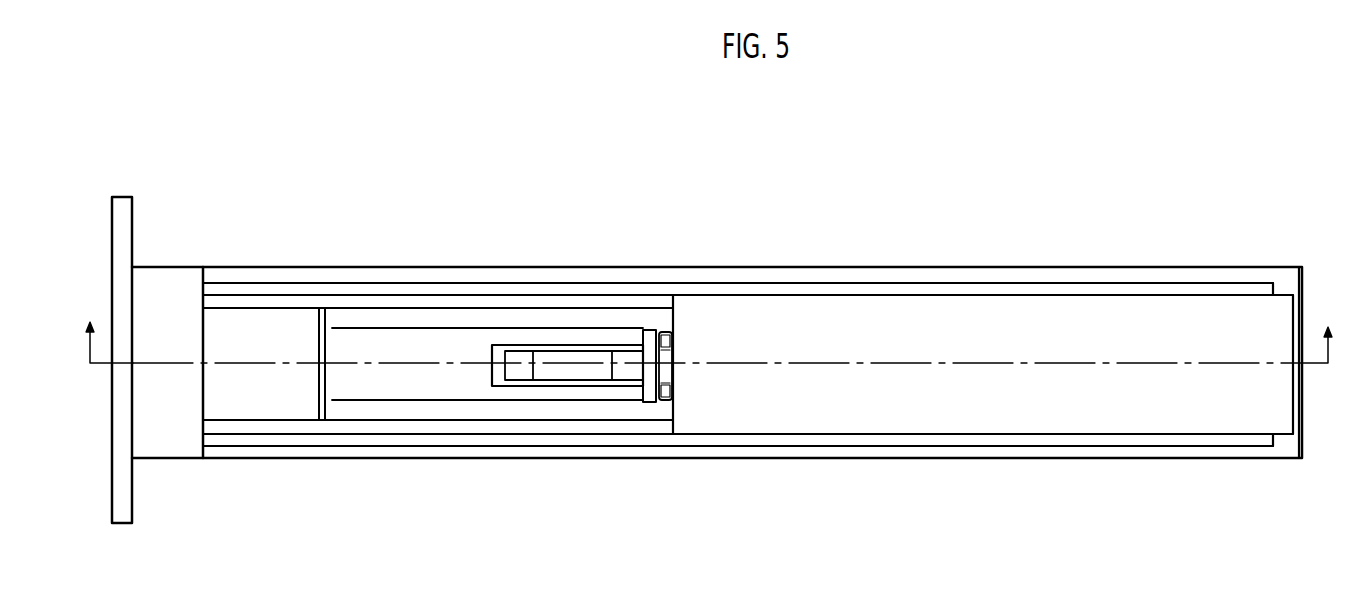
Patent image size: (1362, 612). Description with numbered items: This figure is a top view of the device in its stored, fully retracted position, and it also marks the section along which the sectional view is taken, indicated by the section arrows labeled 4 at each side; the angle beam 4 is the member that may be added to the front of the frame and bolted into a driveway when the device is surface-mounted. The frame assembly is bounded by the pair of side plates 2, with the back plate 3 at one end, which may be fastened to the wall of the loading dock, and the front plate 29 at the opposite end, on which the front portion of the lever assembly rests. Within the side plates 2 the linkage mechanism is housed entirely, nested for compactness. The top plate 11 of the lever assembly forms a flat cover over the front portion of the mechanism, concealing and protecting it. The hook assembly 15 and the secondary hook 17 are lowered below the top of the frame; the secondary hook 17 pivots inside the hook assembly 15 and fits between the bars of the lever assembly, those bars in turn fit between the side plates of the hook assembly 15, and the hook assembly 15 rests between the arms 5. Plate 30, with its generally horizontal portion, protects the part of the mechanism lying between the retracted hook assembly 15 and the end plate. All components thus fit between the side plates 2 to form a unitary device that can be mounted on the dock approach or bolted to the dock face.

The side plates 2 is at (312, 266).
The back plate 3 is at (133, 238).
The angle beam 4 is at (710, 324).
The arms 5 is at (408, 304).
The top plate 11 is at (793, 312).
The hook assembly 15 is at (500, 393).
The secondary hook 17 is at (540, 363).
The front plate 29 is at (1302, 422).
The plate 30 is at (275, 407).